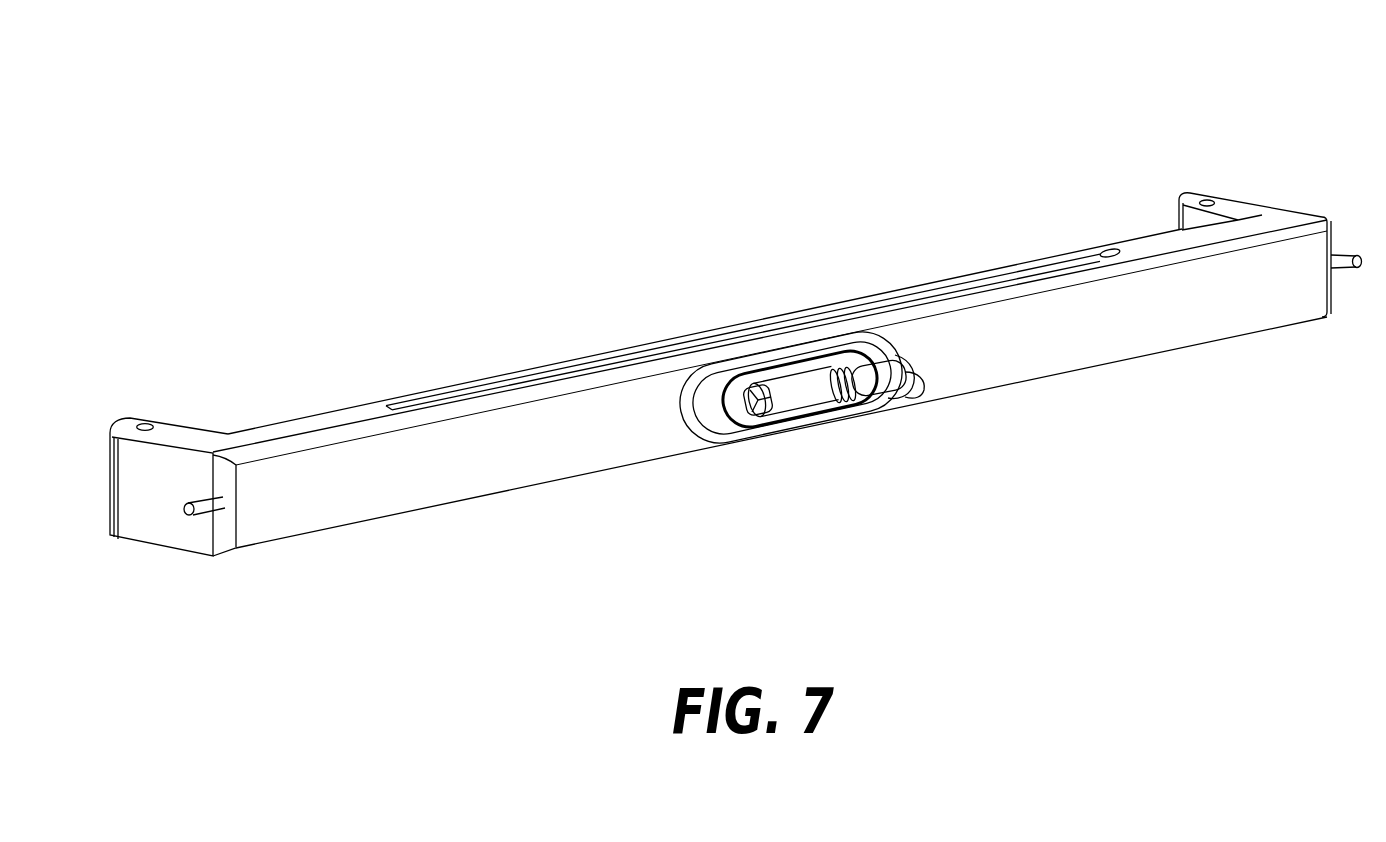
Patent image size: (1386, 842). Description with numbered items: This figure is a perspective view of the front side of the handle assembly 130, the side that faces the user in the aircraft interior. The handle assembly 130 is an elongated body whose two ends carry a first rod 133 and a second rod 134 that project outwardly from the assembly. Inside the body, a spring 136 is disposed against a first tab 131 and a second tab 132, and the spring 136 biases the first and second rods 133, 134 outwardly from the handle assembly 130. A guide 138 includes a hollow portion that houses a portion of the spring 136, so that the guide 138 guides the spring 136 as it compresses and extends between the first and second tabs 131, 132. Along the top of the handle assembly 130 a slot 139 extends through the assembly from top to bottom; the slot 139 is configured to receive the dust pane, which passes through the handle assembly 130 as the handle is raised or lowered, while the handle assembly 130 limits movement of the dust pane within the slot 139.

The handle assembly 130 is at (408, 127).
The first tab 131 is at (728, 418).
The second tab 132 is at (914, 380).
The first rod 133 is at (184, 511).
The second rod 134 is at (1345, 256).
The spring 136 is at (838, 389).
The guide 138 is at (806, 384).
The slot 139 is at (617, 320).